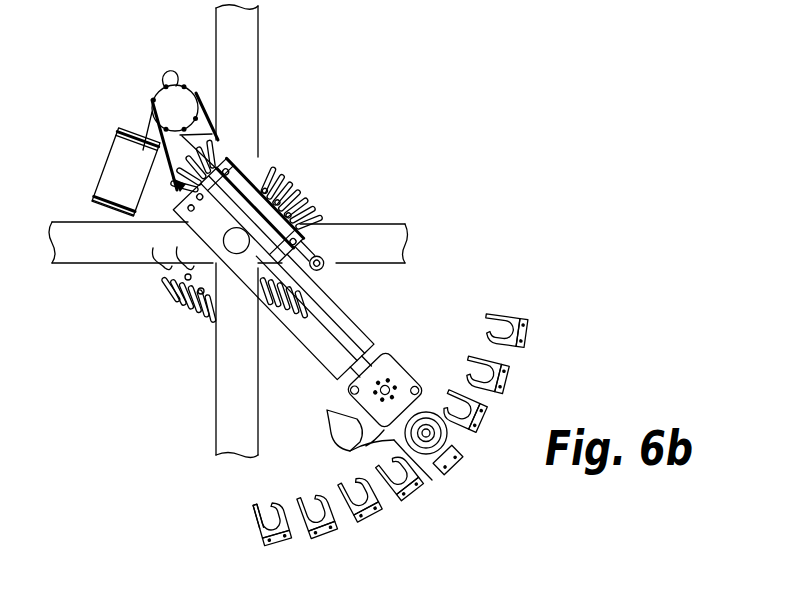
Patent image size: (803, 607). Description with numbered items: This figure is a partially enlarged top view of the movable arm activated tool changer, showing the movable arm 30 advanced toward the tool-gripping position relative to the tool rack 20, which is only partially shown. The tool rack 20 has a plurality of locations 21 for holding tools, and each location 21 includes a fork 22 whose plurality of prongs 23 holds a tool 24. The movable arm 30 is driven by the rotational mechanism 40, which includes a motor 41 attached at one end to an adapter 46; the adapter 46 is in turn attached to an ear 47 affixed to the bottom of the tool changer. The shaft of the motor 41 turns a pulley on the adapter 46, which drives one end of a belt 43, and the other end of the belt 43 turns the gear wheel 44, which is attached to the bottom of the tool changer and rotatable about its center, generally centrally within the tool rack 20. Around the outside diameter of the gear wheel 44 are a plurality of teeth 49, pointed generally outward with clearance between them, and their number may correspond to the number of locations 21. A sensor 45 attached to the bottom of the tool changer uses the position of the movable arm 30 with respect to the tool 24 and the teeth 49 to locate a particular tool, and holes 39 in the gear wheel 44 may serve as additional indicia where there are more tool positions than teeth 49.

The tool rack 20 is at (547, 328).
The location 21 is at (372, 522).
The fork 22 is at (280, 545).
The prong 23 is at (255, 503).
The tool 24 is at (453, 458).
The movable arm 30 is at (413, 362).
The hole 39 is at (222, 345).
The rotational mechanism 40 is at (292, 143).
The motor 41 is at (127, 160).
The belt 43 is at (170, 176).
The gear wheel 44 is at (307, 182).
The sensor 45 is at (162, 288).
The adapter 46 is at (152, 90).
The ear 47 is at (207, 138).
The tooth 49 is at (318, 211).